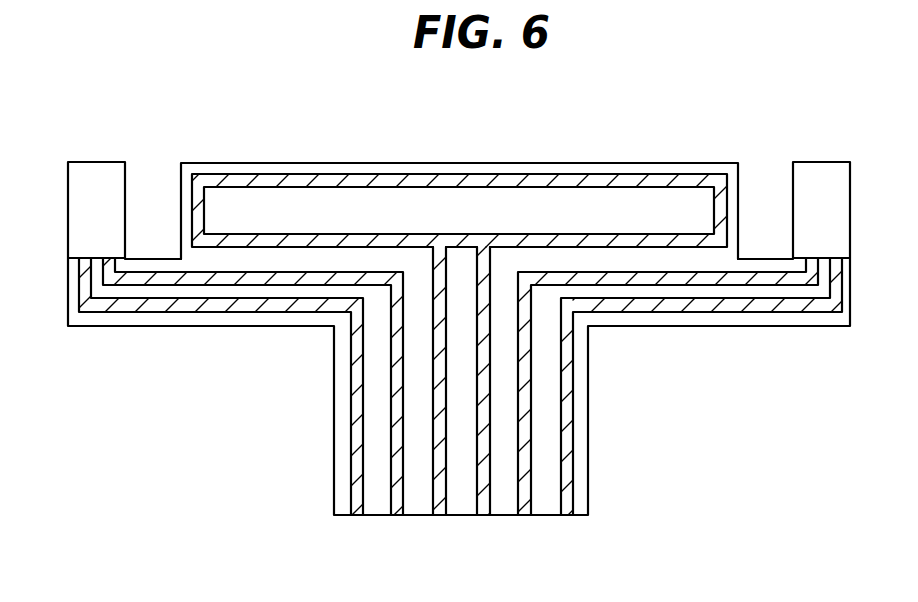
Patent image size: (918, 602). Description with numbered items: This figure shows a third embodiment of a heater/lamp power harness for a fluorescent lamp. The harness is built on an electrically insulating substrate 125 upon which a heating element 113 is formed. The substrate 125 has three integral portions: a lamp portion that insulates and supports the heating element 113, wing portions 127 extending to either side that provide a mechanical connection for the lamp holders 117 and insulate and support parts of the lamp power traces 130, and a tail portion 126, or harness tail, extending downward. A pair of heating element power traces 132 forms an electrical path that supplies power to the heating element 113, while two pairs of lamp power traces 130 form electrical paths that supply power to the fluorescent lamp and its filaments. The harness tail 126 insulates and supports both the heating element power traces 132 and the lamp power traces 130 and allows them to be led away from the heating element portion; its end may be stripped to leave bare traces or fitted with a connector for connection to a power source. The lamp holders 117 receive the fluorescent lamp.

The heating element 113 is at (364, 164).
The lamp holders 117 is at (93, 162).
The electrically insulating substrate 125 is at (630, 164).
The tail portion 126 is at (589, 403).
The wing portions 127 is at (157, 327).
The lamp power traces 130 is at (565, 515).
The heating element power traces 132 is at (483, 515).